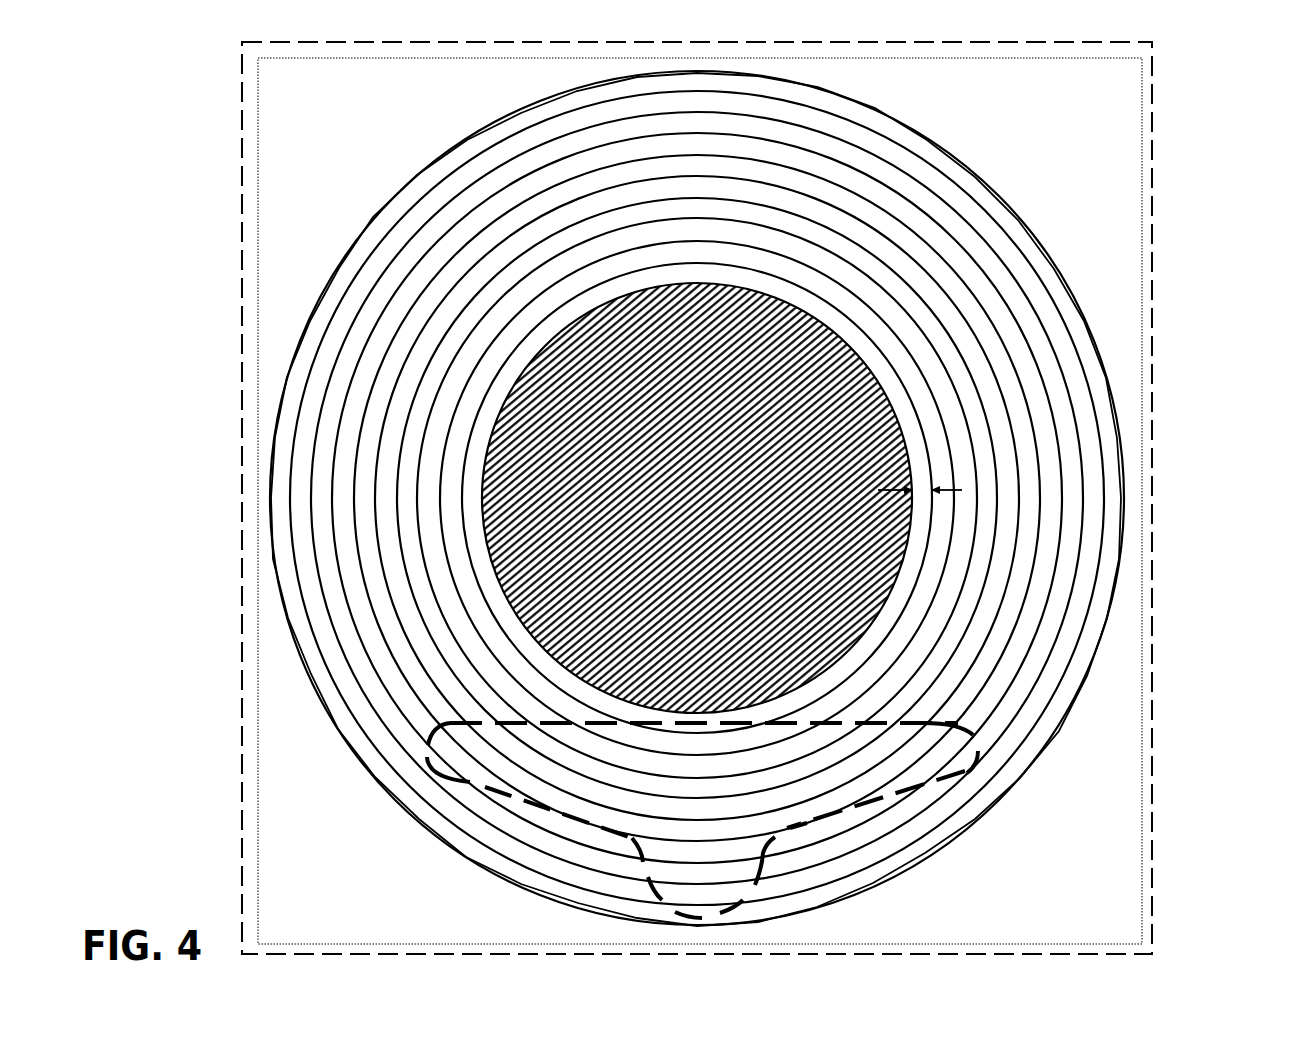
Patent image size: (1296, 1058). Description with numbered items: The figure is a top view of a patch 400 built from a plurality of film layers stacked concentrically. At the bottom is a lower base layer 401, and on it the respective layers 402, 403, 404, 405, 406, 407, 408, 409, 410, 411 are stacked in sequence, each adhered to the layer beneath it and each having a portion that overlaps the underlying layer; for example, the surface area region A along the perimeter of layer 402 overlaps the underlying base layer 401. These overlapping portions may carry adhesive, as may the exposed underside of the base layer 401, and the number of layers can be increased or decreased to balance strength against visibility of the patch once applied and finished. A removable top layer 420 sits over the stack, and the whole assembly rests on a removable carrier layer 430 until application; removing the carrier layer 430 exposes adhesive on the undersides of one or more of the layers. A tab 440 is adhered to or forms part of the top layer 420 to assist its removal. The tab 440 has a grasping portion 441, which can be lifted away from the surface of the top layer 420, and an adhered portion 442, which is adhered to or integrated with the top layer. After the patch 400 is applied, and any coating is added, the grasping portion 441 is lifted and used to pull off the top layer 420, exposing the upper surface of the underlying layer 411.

The patch 400 is at (1212, 90).
The lower base layer 401 is at (657, 286).
The layer 402 is at (657, 264).
The layer 403 is at (657, 243).
The layer 404 is at (657, 222).
The layer 405 is at (657, 200).
The layer 406 is at (657, 178).
The layer 407 is at (657, 157).
The layer 408 is at (657, 136).
The layer 409 is at (657, 114).
The layer 410 is at (657, 92).
The layer 411 is at (746, 76).
The removable top layer 420 is at (818, 86).
The removable carrier layer 430 is at (1152, 265).
The tab 440 is at (815, 822).
The grasping portion 441 is at (702, 918).
The adhered portion 442 is at (970, 762).
The surface area region A is at (920, 490).